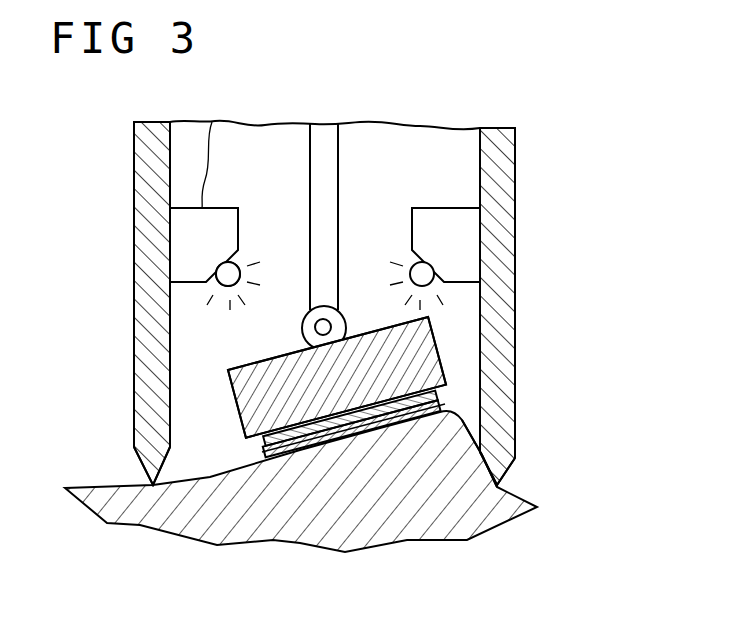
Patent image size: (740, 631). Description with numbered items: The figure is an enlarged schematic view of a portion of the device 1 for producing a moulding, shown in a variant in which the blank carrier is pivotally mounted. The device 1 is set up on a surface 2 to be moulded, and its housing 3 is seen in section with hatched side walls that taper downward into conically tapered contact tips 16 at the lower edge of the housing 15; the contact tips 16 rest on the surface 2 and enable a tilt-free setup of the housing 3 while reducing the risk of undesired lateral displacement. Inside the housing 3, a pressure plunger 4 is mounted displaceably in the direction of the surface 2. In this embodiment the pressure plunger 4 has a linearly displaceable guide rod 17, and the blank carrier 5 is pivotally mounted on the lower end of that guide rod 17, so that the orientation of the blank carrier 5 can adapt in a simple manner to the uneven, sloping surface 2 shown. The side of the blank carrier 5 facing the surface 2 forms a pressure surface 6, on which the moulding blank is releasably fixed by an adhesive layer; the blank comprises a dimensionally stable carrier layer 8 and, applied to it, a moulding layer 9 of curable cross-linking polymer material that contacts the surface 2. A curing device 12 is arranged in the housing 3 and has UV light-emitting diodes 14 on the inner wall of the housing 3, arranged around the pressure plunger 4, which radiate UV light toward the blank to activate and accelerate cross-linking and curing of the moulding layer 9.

The device 1 is at (351, 285).
The surface 2 is at (100, 488).
The housing 3 is at (150, 342).
The pressure plunger 4 is at (362, 297).
The blank carrier 5 is at (445, 352).
The pressure surface 6 is at (266, 447).
The carrier layer 8 is at (440, 398).
The moulding layer 9 is at (440, 416).
The curing device 12 is at (198, 247).
The UV light-emitting diodes 14 is at (218, 281).
The lower edge of the housing 15 is at (520, 478).
The contact tips 16 is at (148, 460).
The guide rod 17 is at (325, 137).